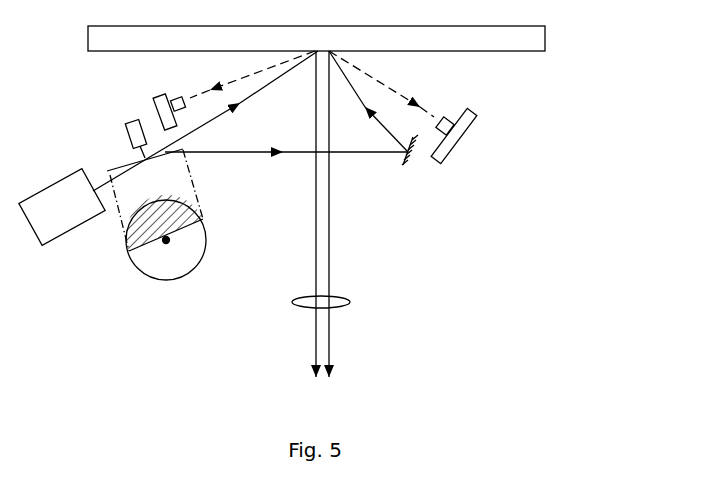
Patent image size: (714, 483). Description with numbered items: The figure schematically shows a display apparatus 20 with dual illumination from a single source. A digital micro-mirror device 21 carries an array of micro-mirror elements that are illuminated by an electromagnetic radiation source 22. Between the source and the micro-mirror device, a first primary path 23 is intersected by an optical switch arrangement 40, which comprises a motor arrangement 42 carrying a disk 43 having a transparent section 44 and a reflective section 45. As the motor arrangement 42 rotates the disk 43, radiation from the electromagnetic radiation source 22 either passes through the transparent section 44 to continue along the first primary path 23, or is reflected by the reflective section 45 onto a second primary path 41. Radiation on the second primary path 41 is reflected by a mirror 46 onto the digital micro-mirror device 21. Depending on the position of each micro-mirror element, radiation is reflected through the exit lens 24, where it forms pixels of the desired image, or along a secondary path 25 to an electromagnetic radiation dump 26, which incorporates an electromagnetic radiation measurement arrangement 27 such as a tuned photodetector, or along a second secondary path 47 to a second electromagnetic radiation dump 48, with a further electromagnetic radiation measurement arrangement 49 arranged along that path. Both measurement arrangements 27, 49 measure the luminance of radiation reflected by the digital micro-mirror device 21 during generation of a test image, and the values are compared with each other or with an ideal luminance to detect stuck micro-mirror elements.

The display apparatus 20 is at (648, 148).
The digital micro-mirror device 21 is at (538, 38).
The electromagnetic radiation source 22 is at (53, 200).
The first primary path 23 is at (331, 342).
The exit lens 24 is at (348, 302).
The secondary path 25 is at (425, 98).
The electromagnetic radiation dump 26 is at (450, 142).
The electromagnetic radiation measurement arrangement 27 is at (450, 111).
The optical switch arrangement 40 is at (113, 115).
The second primary path 41 is at (277, 158).
The motor arrangement 42 is at (133, 122).
The disk 43 is at (120, 165).
The transparent section 44 is at (153, 262).
The reflective section 45 is at (130, 248).
The mirror 46 is at (405, 168).
The second secondary path 47 is at (217, 86).
The second electromagnetic radiation dump 48 is at (157, 95).
The electromagnetic radiation measurement arrangement 49 is at (182, 97).